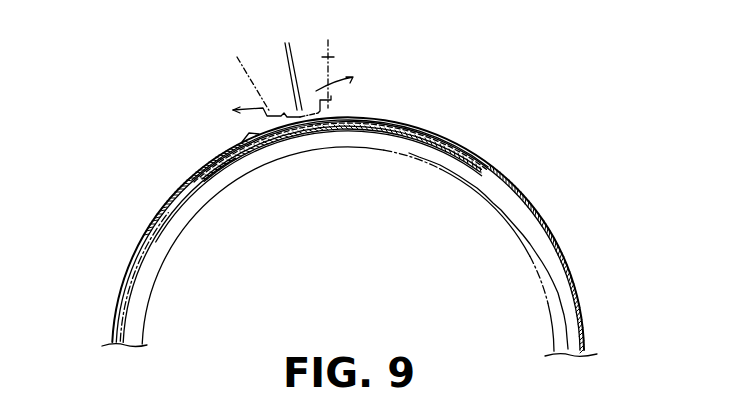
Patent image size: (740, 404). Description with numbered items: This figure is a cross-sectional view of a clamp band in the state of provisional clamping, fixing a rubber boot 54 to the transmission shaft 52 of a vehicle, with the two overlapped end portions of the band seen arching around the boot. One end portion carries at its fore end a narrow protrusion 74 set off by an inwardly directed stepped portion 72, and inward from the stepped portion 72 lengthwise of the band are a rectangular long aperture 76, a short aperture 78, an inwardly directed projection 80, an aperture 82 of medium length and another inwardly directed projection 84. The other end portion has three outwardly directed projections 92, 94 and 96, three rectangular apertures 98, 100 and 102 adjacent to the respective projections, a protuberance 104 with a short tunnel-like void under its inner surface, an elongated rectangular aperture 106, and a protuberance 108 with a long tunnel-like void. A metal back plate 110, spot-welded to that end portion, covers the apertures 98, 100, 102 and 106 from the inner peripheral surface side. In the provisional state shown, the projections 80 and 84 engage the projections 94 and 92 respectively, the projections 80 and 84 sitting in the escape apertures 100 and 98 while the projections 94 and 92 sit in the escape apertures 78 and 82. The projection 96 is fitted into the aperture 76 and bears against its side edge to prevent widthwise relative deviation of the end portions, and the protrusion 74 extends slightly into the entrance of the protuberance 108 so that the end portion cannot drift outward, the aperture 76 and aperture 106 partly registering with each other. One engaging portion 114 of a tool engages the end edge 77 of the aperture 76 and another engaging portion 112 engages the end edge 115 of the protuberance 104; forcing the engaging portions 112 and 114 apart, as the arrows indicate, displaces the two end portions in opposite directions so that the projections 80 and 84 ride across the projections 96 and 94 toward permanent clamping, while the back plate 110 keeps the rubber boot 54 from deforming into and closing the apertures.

The transmission shaft 52 is at (152, 324).
The rubber boot 54 is at (138, 294).
The stepped portion 72 is at (248, 138).
The protrusion 74 is at (217, 157).
The rectangular long aperture 76 is at (383, 117).
The end edge of the aperture 77 is at (283, 140).
The short aperture 78 is at (437, 140).
The inwardly directed projection 80 is at (428, 145).
The aperture of medium length 82 is at (502, 173).
The inwardly directed projection 84 is at (459, 164).
The outwardly directed projection 92 is at (467, 150).
The outwardly directed projection 94 is at (430, 133).
The outwardly directed projection 96 is at (395, 124).
The rectangular aperture 98 is at (456, 164).
The rectangular aperture 100 is at (554, 215).
The rectangular aperture 102 is at (379, 140).
The protuberance 104 is at (333, 117).
The elongated rectangular aperture 106 is at (305, 143).
The protuberance 108 is at (173, 192).
The metal back plate 110 is at (193, 200).
The engaging portion of a tool 112 is at (332, 56).
The engaging portion of a tool 114 is at (243, 67).
The end edge of the protuberance 115 is at (329, 128).